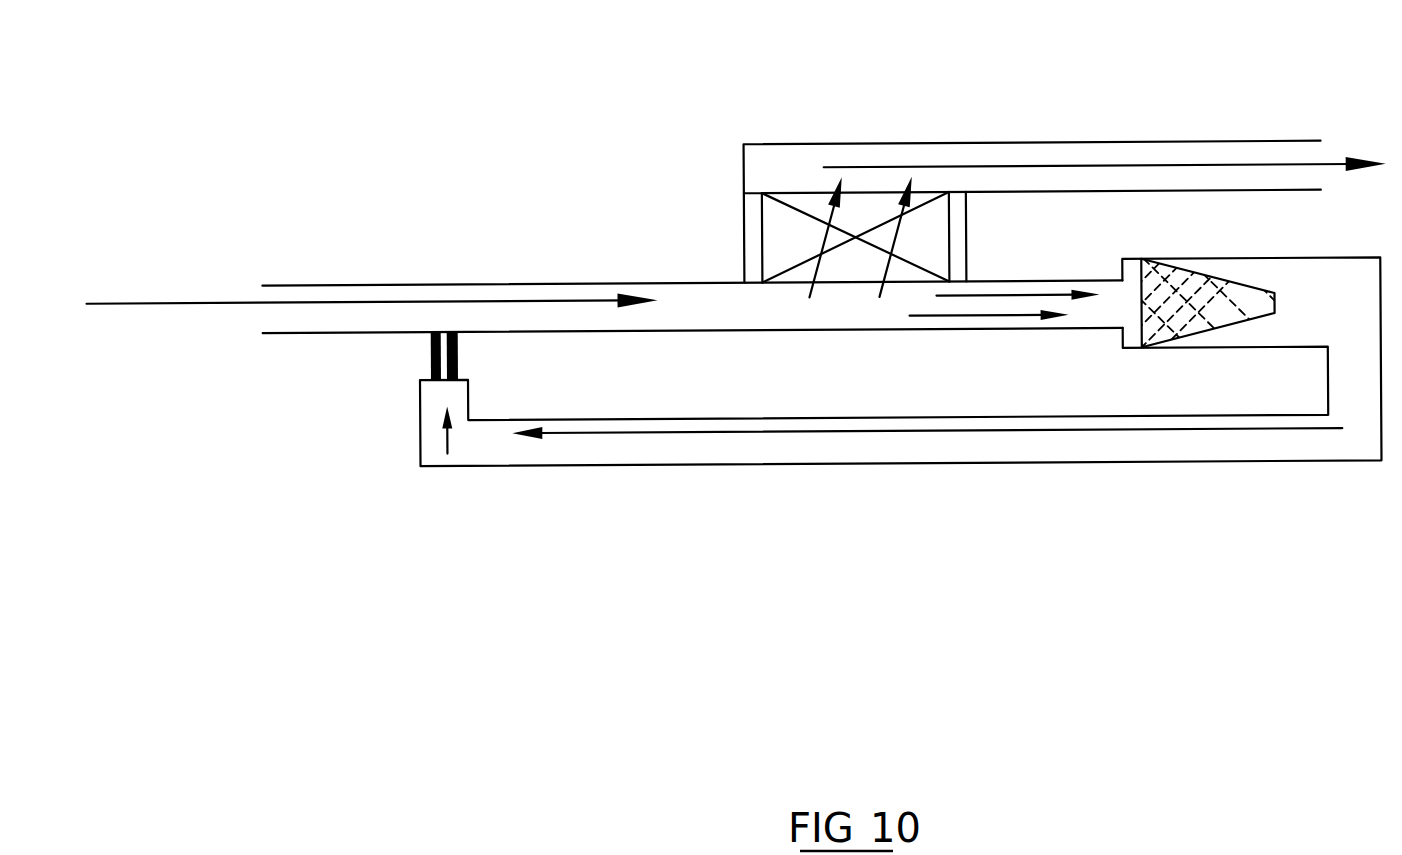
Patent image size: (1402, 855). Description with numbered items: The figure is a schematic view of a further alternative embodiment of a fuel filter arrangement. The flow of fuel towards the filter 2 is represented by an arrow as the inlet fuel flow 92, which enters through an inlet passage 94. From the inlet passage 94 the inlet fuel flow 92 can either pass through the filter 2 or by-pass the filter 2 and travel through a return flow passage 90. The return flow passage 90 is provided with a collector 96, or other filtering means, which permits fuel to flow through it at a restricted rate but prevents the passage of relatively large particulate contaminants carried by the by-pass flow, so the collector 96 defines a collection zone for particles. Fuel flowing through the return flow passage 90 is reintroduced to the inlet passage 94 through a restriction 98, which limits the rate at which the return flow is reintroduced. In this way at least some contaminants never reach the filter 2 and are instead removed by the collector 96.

The filter 2 is at (740, 230).
The return flow passage 90 is at (1130, 452).
The inlet fuel flow 92 is at (140, 304).
The inlet passage 94 is at (427, 257).
The collector 96 is at (1239, 259).
The restriction 98 is at (400, 358).